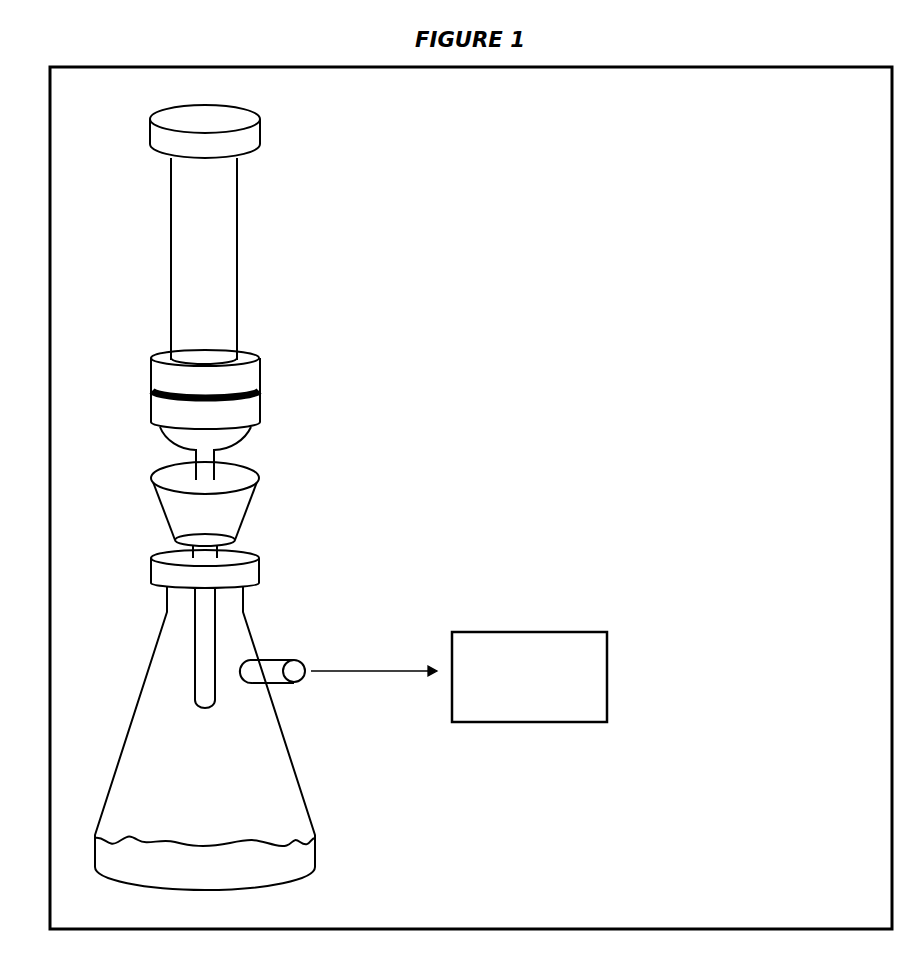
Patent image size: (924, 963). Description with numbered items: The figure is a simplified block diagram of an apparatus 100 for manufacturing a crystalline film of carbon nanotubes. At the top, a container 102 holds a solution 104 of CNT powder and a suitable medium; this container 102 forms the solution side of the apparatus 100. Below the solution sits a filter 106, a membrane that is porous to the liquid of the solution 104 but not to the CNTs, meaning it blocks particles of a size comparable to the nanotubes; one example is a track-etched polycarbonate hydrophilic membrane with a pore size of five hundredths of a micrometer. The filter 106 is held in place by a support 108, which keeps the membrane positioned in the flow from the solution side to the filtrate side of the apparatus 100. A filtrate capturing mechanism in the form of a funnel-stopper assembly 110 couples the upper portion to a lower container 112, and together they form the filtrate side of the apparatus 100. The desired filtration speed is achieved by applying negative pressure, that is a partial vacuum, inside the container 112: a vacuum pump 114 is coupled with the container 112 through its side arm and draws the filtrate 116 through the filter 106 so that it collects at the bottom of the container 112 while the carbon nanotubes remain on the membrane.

The apparatus 100 is at (101, 100).
The container 102 is at (291, 171).
The solution 104 is at (228, 254).
The filter 106 is at (257, 392).
The support 108 is at (247, 411).
The funnel-stopper assembly 110 is at (233, 520).
The container 112 is at (300, 618).
The vacuum pump 114 is at (515, 708).
The filtrate 116 is at (300, 857).